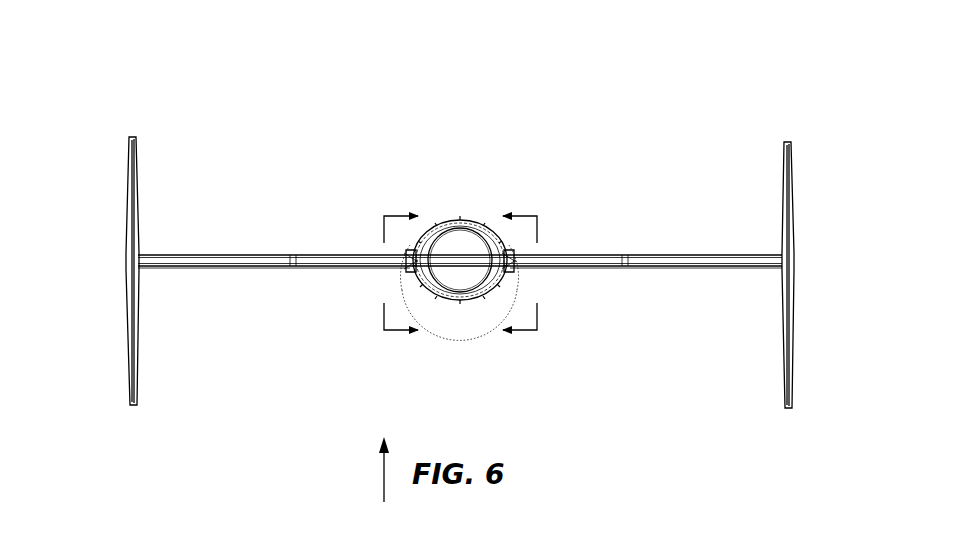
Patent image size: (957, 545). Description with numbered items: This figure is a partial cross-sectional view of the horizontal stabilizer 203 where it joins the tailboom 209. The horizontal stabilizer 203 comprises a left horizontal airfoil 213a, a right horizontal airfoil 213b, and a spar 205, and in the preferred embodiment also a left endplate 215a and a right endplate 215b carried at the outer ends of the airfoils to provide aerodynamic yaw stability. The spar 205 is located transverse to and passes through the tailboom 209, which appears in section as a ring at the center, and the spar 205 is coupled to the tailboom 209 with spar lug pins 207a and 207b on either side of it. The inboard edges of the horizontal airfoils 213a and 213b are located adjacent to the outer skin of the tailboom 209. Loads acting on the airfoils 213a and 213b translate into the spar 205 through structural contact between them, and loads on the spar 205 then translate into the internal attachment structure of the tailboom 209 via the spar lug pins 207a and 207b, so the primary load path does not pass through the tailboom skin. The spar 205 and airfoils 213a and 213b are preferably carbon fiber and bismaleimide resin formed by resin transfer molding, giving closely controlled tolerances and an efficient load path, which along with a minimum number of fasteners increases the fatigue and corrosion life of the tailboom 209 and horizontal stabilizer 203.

The horizontal stabilizer 203 is at (283, 128).
The spar 205 is at (300, 263).
The spar lug pin 207a is at (405, 255).
The spar lug pin 207b is at (515, 257).
The tailboom 209 is at (462, 222).
The left horizontal airfoil 213a is at (246, 268).
The right horizontal airfoil 213b is at (673, 270).
The left endplate 215a is at (138, 387).
The right endplate 215b is at (782, 386).